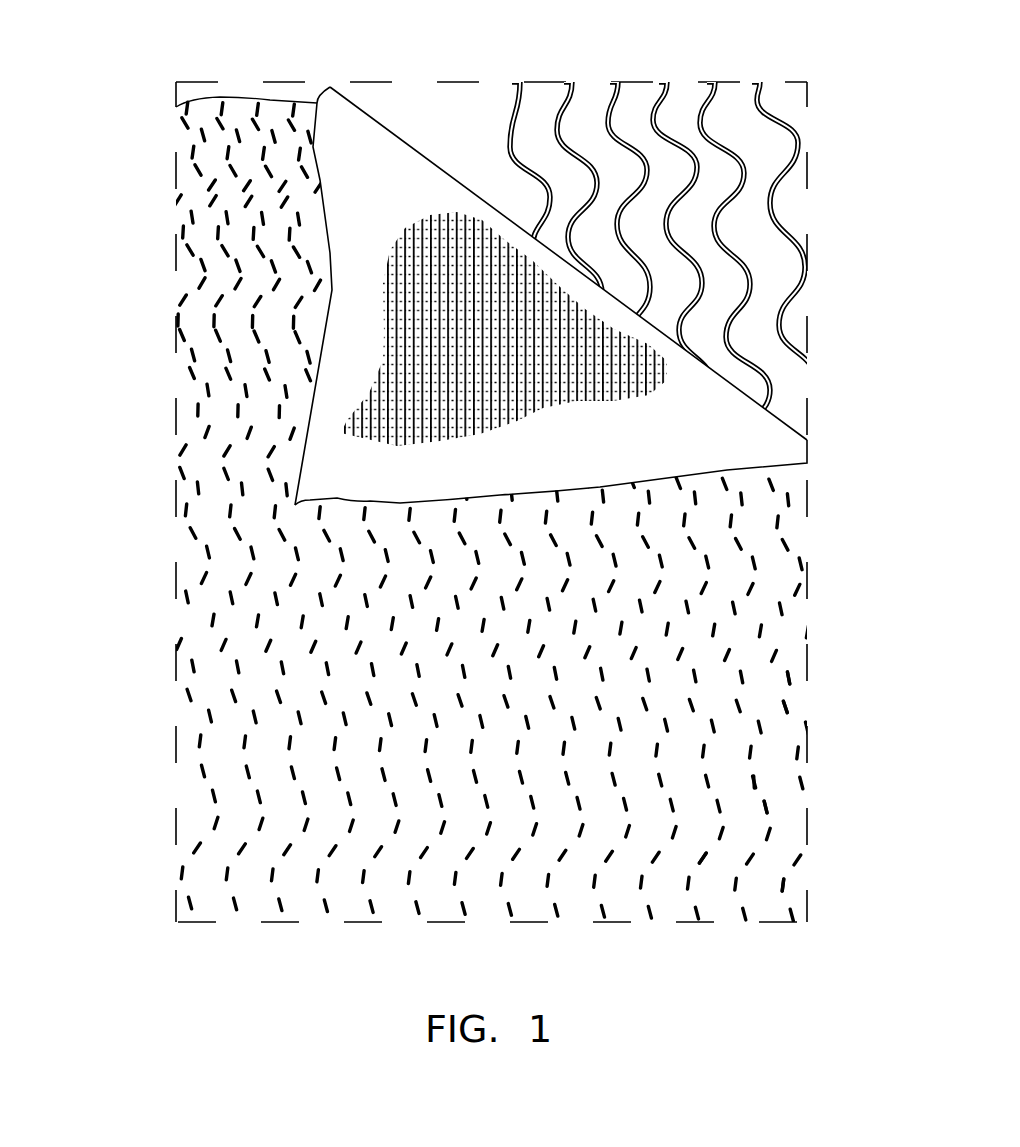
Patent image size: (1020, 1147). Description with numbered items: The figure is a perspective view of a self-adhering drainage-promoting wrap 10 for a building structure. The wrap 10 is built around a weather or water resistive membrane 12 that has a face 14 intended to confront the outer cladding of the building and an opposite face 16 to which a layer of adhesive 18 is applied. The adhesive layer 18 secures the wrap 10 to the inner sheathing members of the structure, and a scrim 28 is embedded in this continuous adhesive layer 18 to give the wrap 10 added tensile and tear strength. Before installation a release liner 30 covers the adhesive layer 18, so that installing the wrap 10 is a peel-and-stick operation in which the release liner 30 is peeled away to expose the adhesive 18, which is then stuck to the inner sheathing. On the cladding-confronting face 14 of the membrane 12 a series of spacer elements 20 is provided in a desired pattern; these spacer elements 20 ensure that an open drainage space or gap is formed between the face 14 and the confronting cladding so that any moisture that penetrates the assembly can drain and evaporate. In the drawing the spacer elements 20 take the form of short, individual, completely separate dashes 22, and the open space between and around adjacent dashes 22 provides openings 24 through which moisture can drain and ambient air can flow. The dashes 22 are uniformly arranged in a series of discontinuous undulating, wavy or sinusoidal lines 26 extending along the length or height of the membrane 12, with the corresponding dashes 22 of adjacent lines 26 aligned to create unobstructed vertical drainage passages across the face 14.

The wrap 10 is at (190, 762).
The weather or water resistive membrane 12 is at (200, 283).
The face 14 is at (223, 282).
The opposite face 16 is at (390, 175).
The layer of adhesive 18 is at (503, 243).
The spacer elements 20 is at (233, 898).
The dashes 22 is at (778, 710).
The openings 24 is at (770, 822).
The discontinuous lines 26 is at (782, 882).
The scrim 28 is at (735, 438).
The release liner 30 is at (778, 252).